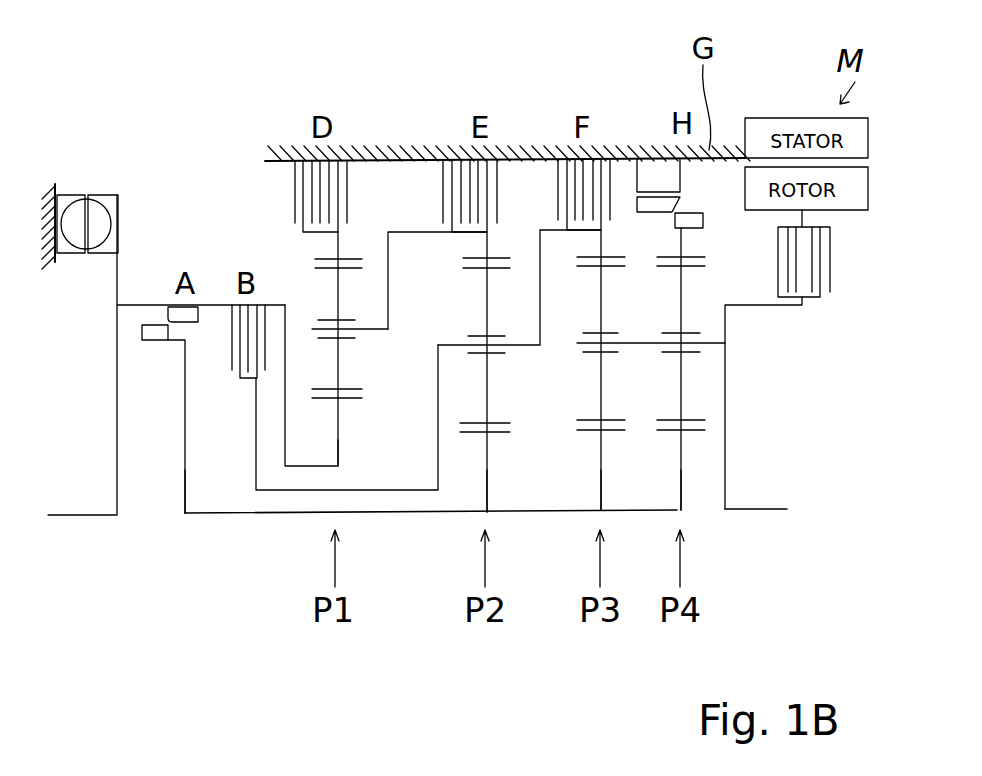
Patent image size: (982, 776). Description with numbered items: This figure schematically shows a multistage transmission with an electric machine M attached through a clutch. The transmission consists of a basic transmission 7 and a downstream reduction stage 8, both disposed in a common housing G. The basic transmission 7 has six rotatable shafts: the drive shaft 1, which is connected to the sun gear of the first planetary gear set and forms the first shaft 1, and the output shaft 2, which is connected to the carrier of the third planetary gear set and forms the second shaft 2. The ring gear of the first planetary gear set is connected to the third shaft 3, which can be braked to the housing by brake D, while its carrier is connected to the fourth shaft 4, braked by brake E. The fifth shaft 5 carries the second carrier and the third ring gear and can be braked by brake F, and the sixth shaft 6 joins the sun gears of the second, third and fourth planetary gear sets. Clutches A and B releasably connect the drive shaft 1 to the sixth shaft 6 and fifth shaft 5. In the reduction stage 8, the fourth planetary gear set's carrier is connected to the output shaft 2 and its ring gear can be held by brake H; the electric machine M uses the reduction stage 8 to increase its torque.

The drive shaft 1 is at (335, 437).
The output shaft 2 is at (725, 410).
The third shaft 3 is at (338, 250).
The fourth shaft 4 is at (388, 280).
The fifth shaft 5 is at (540, 283).
The sixth shaft 6 is at (185, 485).
The basic transmission 7 is at (380, 450).
The reduction stage 8 is at (757, 351).